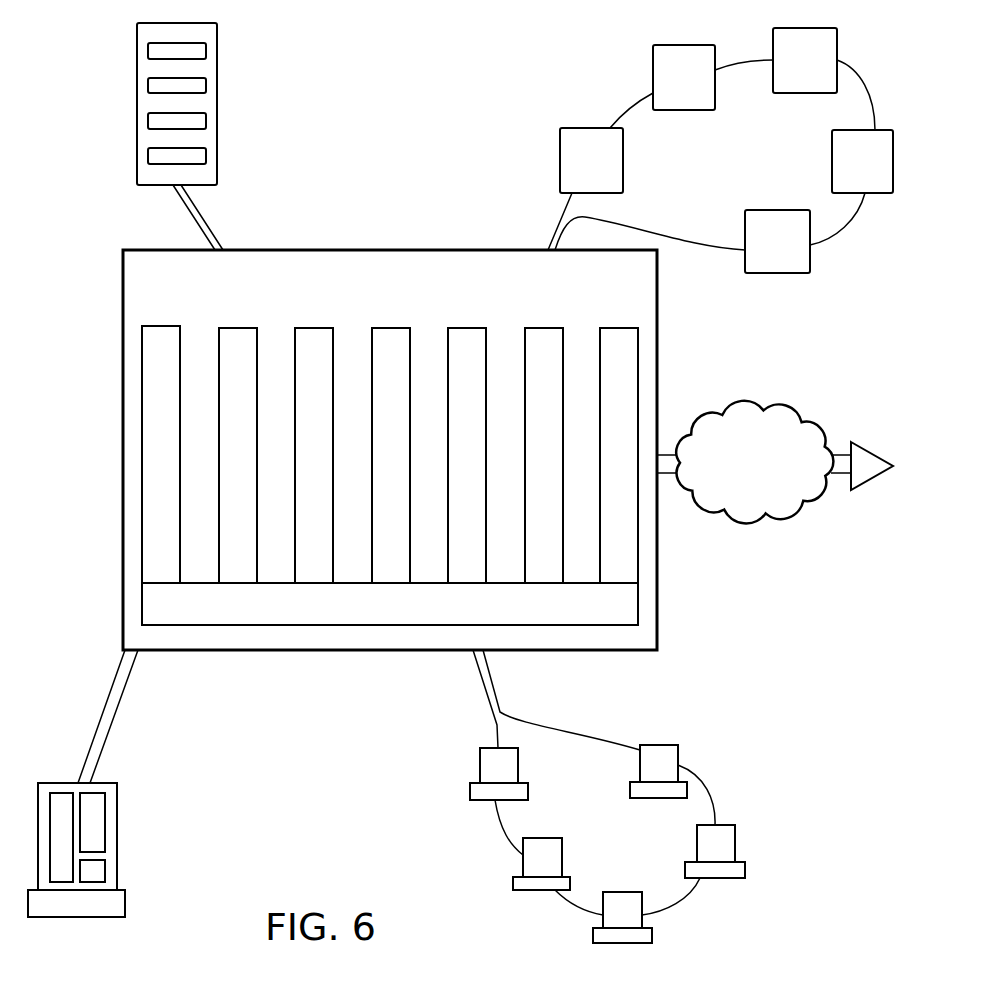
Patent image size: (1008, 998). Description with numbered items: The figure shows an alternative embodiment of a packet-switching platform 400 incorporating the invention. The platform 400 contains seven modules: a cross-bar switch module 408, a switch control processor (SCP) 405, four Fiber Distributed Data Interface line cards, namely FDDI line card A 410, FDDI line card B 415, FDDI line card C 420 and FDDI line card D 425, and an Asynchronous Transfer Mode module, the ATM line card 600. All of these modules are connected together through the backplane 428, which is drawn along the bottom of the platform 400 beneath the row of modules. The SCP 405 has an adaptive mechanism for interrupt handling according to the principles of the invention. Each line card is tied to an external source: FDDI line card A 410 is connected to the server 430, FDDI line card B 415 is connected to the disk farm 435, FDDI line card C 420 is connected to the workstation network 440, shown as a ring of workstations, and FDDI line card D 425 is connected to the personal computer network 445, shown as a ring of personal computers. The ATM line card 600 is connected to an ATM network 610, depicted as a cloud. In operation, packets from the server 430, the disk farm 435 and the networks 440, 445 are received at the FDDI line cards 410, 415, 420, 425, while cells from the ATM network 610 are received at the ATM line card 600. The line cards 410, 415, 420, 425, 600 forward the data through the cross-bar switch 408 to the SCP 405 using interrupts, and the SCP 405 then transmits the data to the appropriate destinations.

The packet-switching platform 400 is at (123, 447).
The switch control processor (SCP) 405 is at (322, 272).
The cross-bar switch module 408 is at (393, 272).
The FDDI line card A 410 is at (141, 353).
The FDDI line card B 415 is at (219, 337).
The FDDI line card C 420 is at (488, 342).
The FDDI line card D 425 is at (563, 337).
The backplane 428 is at (141, 603).
The server 430 is at (118, 820).
The disk farm 435 is at (137, 70).
The workstation network 440 is at (653, 52).
The personal computer network 445 is at (660, 745).
The ATM line card 600 is at (640, 360).
The ATM network 610 is at (772, 405).